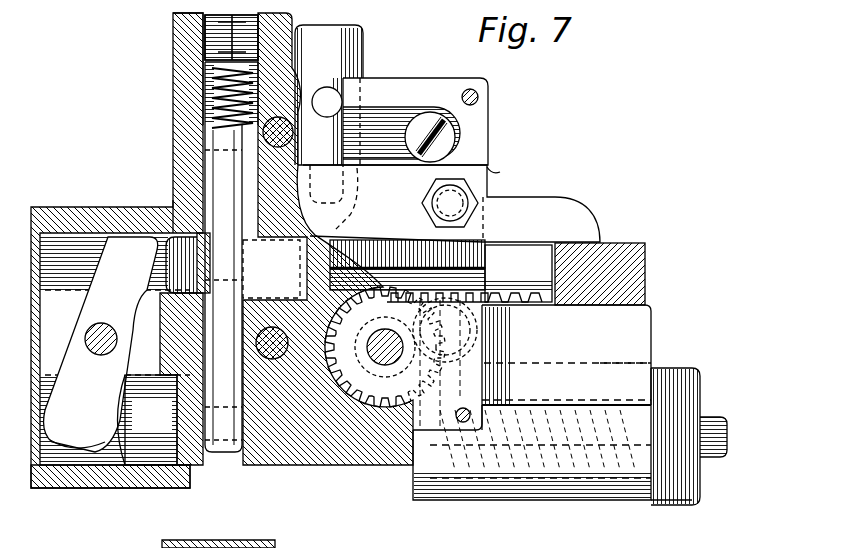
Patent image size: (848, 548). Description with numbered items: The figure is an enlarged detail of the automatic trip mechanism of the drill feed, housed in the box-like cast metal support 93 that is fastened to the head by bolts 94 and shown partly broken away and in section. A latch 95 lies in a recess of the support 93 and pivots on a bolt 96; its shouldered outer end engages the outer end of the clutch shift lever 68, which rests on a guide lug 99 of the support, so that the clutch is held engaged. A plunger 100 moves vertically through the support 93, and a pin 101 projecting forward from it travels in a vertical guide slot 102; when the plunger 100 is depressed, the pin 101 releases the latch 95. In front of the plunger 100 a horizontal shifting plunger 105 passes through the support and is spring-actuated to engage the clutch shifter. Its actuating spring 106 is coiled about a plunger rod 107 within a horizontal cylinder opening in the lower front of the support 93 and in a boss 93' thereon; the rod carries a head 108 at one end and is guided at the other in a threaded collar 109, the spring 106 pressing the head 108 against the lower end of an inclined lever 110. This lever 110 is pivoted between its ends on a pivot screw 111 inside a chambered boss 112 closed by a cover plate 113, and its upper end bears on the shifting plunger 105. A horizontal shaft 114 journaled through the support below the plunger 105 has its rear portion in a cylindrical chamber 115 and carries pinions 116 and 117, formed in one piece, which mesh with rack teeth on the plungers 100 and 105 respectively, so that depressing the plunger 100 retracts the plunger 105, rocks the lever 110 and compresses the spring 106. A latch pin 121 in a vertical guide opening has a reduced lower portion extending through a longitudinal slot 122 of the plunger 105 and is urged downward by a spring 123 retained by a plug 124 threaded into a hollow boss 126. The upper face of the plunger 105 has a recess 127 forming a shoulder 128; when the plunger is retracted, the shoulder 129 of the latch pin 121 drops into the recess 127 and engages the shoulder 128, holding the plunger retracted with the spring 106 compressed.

The shift lever 68 is at (648, 275).
The support 93 is at (512, 154).
The boss 93' is at (689, 517).
The bolts 94 is at (320, 129).
The latch 95 is at (518, 210).
The bolt 96 is at (425, 202).
The guide lug 99 is at (655, 331).
The plunger 100 is at (362, 55).
The pin 101 is at (342, 102).
The vertical guide slot 102 is at (338, 145).
The shifting plunger 105 is at (518, 273).
The actuating spring 106 is at (505, 485).
The plunger rod 107 is at (148, 420).
The head 108 is at (138, 465).
The collar 109 is at (700, 400).
The lever 110 is at (75, 462).
The pivot screw 111 is at (102, 322).
The chambered boss 112 is at (75, 207).
The cover plate 113 is at (43, 303).
The horizontal shaft 114 is at (400, 352).
The cylindrical chamber 115 is at (350, 395).
The pinion 116 is at (428, 347).
The pinion 117 is at (425, 320).
The latch pin 121 is at (212, 142).
The slot 122 is at (350, 251).
The spring 123 is at (213, 95).
The plug 124 is at (205, 33).
The hollow boss 126 is at (173, 70).
The recess 127 is at (366, 208).
The shoulder 128 is at (233, 267).
The shoulder 129 is at (178, 192).